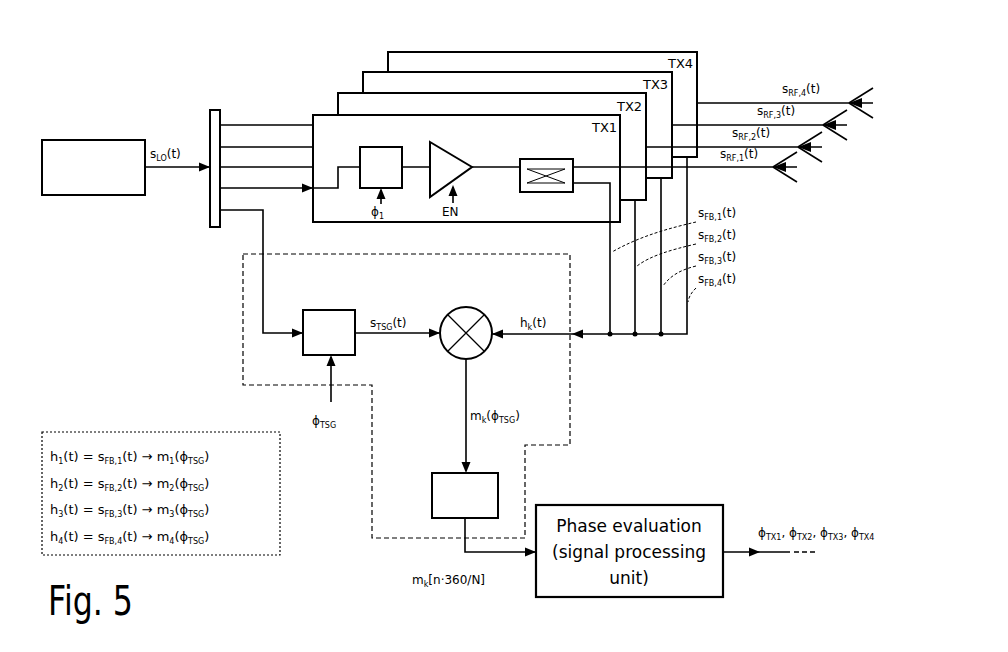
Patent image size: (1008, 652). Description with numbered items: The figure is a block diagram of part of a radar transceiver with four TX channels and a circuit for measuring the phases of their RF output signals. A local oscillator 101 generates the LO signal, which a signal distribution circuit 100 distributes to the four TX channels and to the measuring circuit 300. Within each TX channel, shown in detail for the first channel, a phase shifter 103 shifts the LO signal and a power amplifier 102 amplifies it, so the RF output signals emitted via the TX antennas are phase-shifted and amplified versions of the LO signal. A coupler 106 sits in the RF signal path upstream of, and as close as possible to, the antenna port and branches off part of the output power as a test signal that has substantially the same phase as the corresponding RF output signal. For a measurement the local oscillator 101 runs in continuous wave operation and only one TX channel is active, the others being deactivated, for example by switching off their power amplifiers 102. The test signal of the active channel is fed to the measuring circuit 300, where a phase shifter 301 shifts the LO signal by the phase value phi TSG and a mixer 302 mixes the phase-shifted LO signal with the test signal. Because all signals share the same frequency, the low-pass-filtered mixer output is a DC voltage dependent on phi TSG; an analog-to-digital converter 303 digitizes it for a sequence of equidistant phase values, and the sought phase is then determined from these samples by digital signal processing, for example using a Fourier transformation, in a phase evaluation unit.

The signal distribution circuit 100 is at (215, 110).
The local oscillator 101 is at (80, 196).
The power amplifier 102 is at (456, 156).
The phase shifter 103 is at (402, 151).
The coupler 106 is at (538, 158).
The measuring circuit 300 is at (243, 338).
The phase shifter 301 is at (333, 310).
The mixer 302 is at (478, 311).
The analog-to-digital converter 303 is at (432, 492).